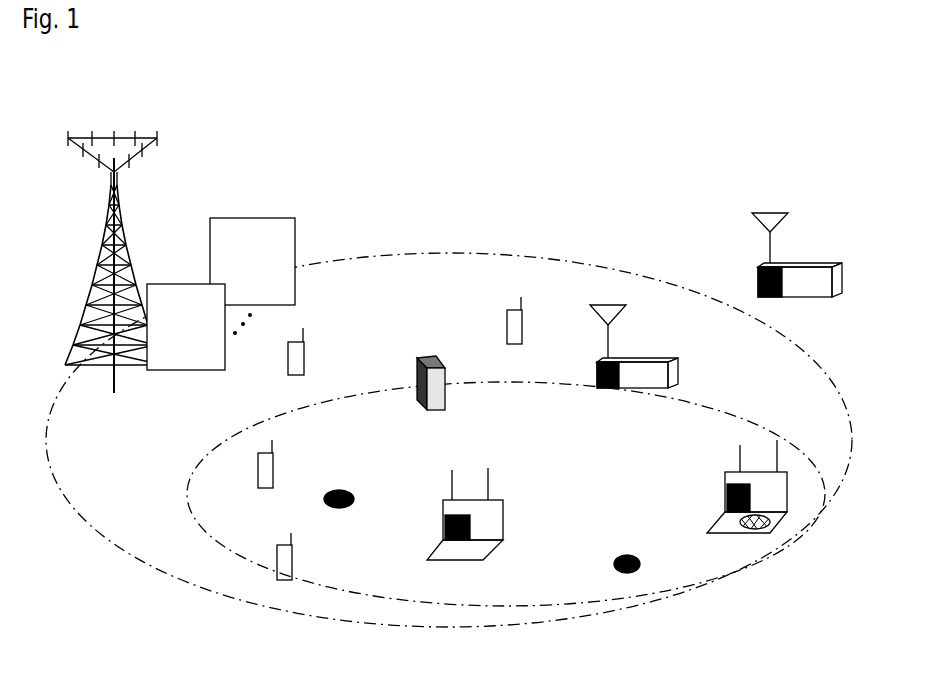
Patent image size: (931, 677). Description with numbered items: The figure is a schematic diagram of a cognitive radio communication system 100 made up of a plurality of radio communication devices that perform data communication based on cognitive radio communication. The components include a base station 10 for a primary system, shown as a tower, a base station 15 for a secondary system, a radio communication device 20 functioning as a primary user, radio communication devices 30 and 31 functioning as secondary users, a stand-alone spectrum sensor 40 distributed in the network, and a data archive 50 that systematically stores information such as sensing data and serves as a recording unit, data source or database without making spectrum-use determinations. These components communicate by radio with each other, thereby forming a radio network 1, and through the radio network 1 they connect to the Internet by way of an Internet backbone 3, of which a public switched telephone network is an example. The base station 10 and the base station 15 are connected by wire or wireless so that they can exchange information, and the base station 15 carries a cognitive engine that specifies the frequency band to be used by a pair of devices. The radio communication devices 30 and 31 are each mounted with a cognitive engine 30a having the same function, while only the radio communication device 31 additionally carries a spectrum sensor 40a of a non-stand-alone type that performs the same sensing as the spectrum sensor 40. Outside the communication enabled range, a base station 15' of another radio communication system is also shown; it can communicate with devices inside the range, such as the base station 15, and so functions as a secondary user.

The cognitive radio communication system 100 is at (708, 131).
The base station for a primary system 10 is at (120, 127).
The radio network 1 is at (193, 284).
The Internet backbone 3 is at (265, 218).
The radio communication device 20 is at (512, 310).
The data archive 50 is at (420, 356).
The base station for a secondary system 15 is at (645, 314).
The base station for a secondary system of another radio communication system 15' is at (810, 241).
The radio communication device 30 is at (495, 500).
The cognitive engine 30a is at (470, 523).
The radio communication device 31 is at (790, 495).
The spectrum sensor 40 is at (340, 508).
The spectrum sensor 40a is at (757, 528).